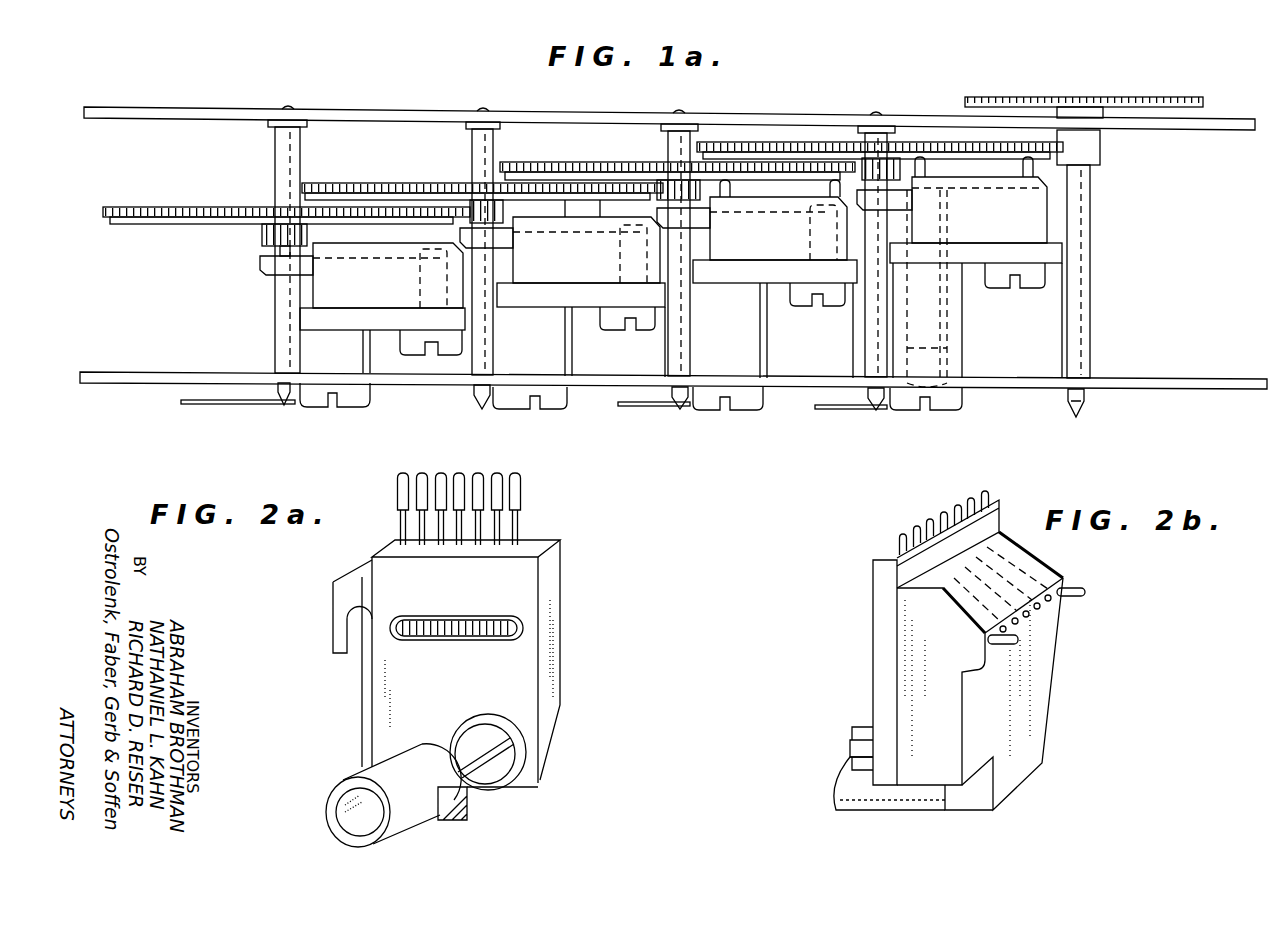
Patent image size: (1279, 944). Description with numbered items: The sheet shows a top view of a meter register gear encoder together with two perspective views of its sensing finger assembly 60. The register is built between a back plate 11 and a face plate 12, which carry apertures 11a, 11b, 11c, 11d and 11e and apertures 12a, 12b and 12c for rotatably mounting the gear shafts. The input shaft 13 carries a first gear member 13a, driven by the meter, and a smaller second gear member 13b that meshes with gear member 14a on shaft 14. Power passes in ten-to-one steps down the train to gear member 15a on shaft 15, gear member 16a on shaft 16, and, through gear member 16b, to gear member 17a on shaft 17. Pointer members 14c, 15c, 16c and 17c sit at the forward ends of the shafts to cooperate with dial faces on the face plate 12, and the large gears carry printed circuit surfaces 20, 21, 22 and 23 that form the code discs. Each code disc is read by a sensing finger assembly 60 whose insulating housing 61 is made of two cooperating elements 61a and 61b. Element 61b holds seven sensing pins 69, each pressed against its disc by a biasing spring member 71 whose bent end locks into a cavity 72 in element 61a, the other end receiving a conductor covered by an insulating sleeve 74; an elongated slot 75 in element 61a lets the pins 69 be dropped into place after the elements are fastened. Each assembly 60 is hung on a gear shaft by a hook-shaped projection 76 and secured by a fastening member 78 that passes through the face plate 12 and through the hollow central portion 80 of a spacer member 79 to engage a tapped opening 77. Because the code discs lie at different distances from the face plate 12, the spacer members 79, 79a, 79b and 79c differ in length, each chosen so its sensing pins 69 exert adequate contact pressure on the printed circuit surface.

In FIG. 1a, the back plate 11 is at (200, 88).
In FIG. 1a, the aperture in back plate 11a is at (1105, 130).
In FIG. 1a, the aperture in back plate 11b is at (895, 125).
In FIG. 1a, the aperture in back plate 11c is at (700, 121).
In FIG. 1a, the aperture in back plate 11d is at (505, 120).
In FIG. 1a, the aperture in back plate 11e is at (295, 110).
In FIG. 1a, the face plate 12 is at (673, 380).
In FIG. 1a, the aperture in face plate 12a is at (283, 371).
In FIG. 1a, the aperture in face plate 12b is at (866, 373).
In FIG. 1a, the aperture in face plate 12c is at (672, 373).
In FIG. 1a, the input shaft 13 is at (1090, 336).
In FIG. 1a, the first gear member 13a is at (1084, 90).
In FIG. 1a, the second gear member 13b is at (1100, 160).
In FIG. 1a, the gear shaft 14 is at (862, 310).
In FIG. 1a, the gear member 14a is at (822, 140).
In FIG. 1a, the pointer member 14c is at (850, 411).
In FIG. 1a, the gear shaft 15 is at (668, 328).
In FIG. 1a, the gear member 15a is at (610, 162).
In FIG. 1a, the pointer member 15c is at (652, 408).
In FIG. 1a, the gear shaft 16 is at (470, 330).
In FIG. 1a, the gear member 16a is at (422, 182).
In FIG. 1a, the gear member 16b is at (505, 210).
In FIG. 1a, the pointer member 16c is at (486, 409).
In FIG. 1a, the gear shaft 17 is at (273, 303).
In FIG. 1a, the gear member 17a is at (216, 206).
In FIG. 1a, the pointer member 17c is at (238, 406).
In FIG. 1a, the printed circuit surface 20 is at (952, 160).
In FIG. 1a, the printed circuit surface 21 is at (732, 180).
In FIG. 1a, the printed circuit surface 22 is at (578, 200).
In FIG. 1a, the printed circuit surface 23 is at (205, 226).
In FIG. 1a, the sensing finger assembly 60 is at (661, 287).
In FIG. 2a, the sensing finger assembly 60 is at (447, 660).
In FIG. 2b, the sensing finger assembly 60 is at (964, 661).
In FIG. 2a, the housing 61 is at (380, 697).
In FIG. 2b, the housing 61 is at (873, 665).
In FIG. 2b, the housing element 61a is at (990, 500).
In FIG. 2b, the housing element 61b is at (1048, 565).
In FIG. 2b, the sensing pin 69 is at (1070, 609).
In FIG. 2a, the biasing spring member 71 is at (528, 521).
In FIG. 2b, the biasing spring member 71 is at (924, 501).
In FIG. 2a, the cavity 72 is at (487, 776).
In FIG. 2b, the cavity 72 is at (850, 733).
In FIG. 2a, the insulating sleeve 74 is at (505, 495).
In FIG. 2b, the insulating sleeve 74 is at (898, 524).
In FIG. 2a, the elongated slot 75 is at (525, 628).
In FIG. 2a, the hook-shaped projection 76 is at (333, 612).
In FIG. 1a, the tapped opening 77 is at (940, 209).
In FIG. 1a, the fastening member 78 is at (963, 402).
In FIG. 1a, the spacer member 79 is at (965, 341).
In FIG. 2a, the spacer member 79 is at (343, 785).
In FIG. 2b, the spacer member 79 is at (872, 812).
In FIG. 1a, the spacer member 79a is at (767, 340).
In FIG. 1a, the spacer member 79b is at (565, 335).
In FIG. 1a, the spacer member 79c is at (363, 340).
In FIG. 1a, the hollow central portion 80 is at (943, 305).